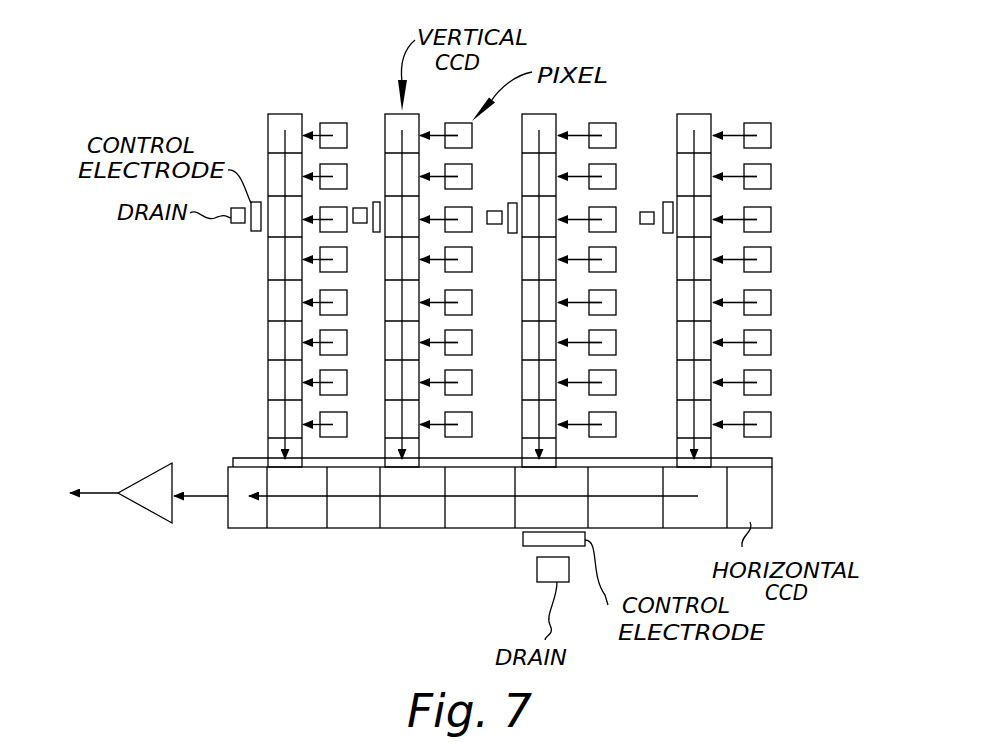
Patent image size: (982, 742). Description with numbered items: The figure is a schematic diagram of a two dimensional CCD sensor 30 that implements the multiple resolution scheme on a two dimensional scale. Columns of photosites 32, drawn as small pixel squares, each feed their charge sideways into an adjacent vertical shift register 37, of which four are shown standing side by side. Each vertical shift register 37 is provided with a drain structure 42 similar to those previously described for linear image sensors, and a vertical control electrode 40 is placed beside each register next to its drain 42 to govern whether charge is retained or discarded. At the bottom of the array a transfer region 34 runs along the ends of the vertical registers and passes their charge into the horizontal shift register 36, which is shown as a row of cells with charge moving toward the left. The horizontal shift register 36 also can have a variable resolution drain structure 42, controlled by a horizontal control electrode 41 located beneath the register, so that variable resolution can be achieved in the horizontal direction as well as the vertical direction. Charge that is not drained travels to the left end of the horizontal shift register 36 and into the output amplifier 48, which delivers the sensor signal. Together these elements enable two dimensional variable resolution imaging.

The two dimensional CCD sensor 30 is at (814, 259).
The photosites 32 is at (762, 423).
The transfer region 34 is at (772, 462).
The horizontal shift register 36 is at (302, 528).
The vertical shift register 37 is at (268, 333).
The vertical control electrodes 40 is at (256, 233).
The horizontal control electrode 41 is at (523, 542).
The drain 42 is at (238, 224).
The output amplifier 48 is at (148, 500).